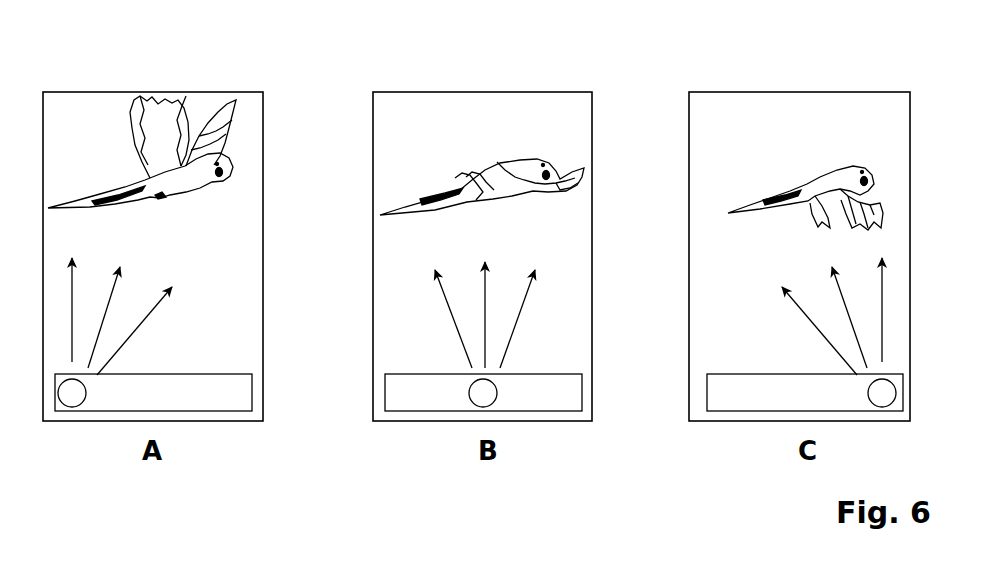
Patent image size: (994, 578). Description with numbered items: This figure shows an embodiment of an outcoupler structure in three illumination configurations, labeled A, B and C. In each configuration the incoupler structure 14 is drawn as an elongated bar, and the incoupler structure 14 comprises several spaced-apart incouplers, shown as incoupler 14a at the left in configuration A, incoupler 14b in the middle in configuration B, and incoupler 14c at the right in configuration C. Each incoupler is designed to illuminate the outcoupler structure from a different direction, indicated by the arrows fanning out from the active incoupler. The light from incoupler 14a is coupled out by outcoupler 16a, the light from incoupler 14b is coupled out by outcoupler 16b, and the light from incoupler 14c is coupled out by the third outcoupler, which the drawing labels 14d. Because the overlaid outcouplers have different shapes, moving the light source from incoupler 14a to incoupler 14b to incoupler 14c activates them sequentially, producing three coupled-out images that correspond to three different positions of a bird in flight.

The incoupler structure 14 is at (183, 411).
The incoupler 14a is at (72, 408).
The incoupler 14b is at (475, 407).
The incoupler 14c is at (873, 407).
The displayed image of object (third view) 14d is at (805, 180).
The outcoupler 16a is at (128, 178).
The outcoupler 16b is at (492, 168).